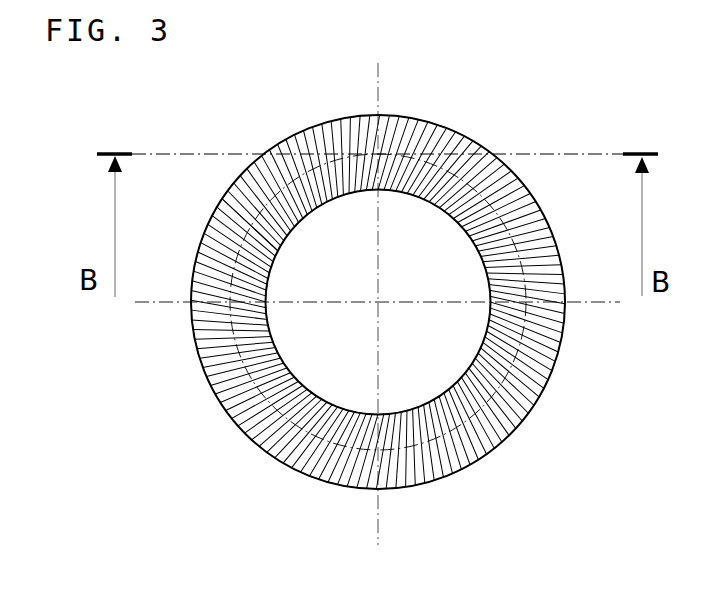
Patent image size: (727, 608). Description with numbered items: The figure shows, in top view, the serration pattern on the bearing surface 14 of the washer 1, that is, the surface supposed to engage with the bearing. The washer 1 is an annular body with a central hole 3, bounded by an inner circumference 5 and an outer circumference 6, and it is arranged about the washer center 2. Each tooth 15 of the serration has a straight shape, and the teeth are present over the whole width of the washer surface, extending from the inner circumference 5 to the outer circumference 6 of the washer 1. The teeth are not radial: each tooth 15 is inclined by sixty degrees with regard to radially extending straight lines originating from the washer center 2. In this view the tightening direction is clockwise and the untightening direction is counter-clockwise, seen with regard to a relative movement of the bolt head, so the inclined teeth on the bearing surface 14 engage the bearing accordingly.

The washer 1 is at (378, 272).
The washer center 2 is at (378, 302).
The central hole of the washer 3 is at (352, 263).
The inner circumference 5 is at (369, 189).
The outer circumference 6 is at (323, 124).
The bearing surface 14 is at (235, 180).
The tooth 15 is at (433, 142).